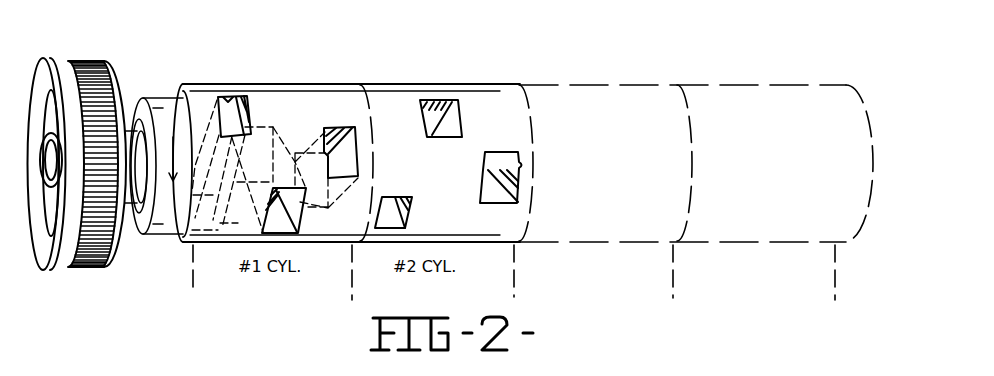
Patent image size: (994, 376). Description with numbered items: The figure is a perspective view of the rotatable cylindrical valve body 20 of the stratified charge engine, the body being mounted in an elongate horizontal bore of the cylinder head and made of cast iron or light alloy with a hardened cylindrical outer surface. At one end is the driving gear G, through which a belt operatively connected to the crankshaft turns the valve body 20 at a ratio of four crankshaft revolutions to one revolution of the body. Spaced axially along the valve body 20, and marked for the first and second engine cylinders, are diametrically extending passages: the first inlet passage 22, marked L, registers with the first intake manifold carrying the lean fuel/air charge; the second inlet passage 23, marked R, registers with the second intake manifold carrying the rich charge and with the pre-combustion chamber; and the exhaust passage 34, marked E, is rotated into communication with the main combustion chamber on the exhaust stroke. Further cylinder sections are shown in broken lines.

The driving gear G is at (82, 62).
The cylindrical valve body 20 is at (601, 136).
The first inlet passage 22 is at (303, 213).
The second inlet passage 23 is at (229, 96).
The exhaust passage 34 is at (340, 129).